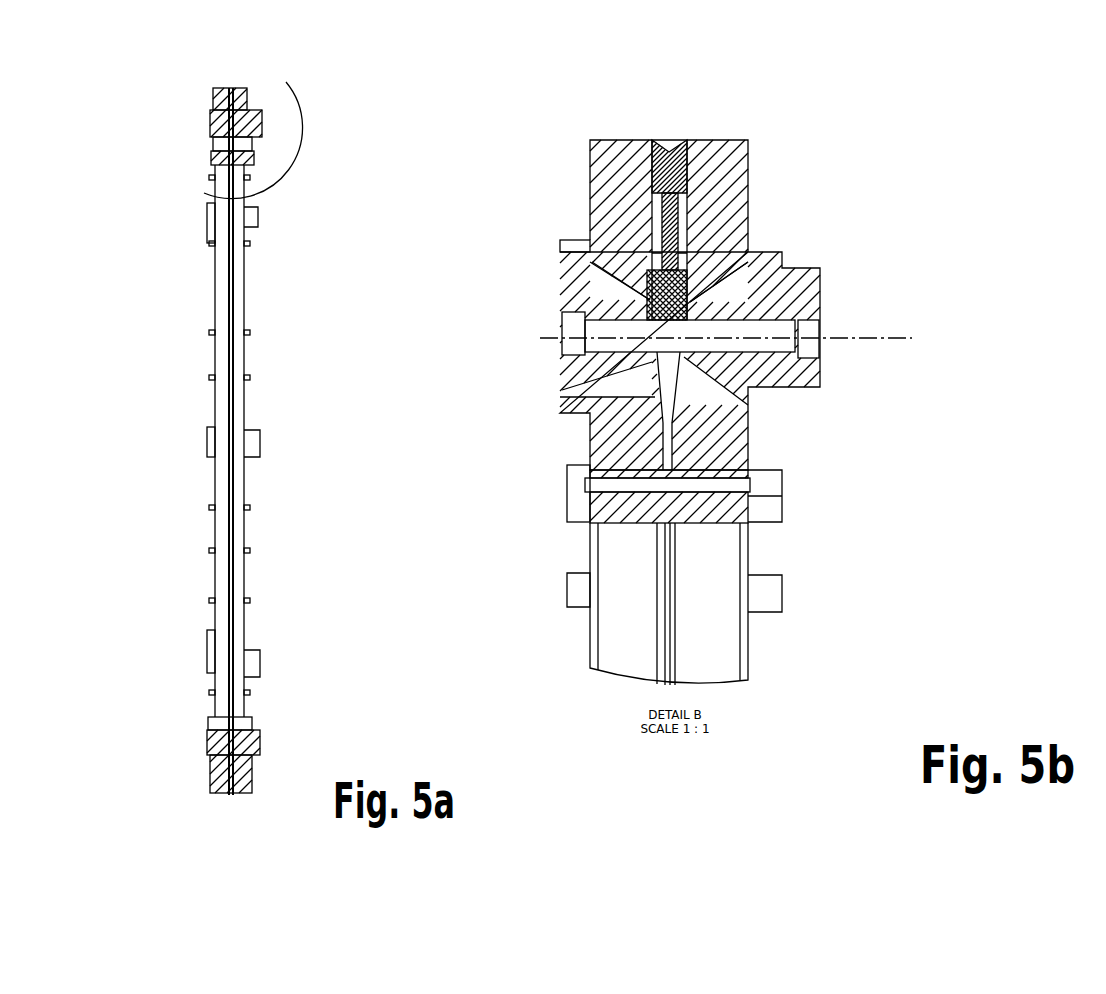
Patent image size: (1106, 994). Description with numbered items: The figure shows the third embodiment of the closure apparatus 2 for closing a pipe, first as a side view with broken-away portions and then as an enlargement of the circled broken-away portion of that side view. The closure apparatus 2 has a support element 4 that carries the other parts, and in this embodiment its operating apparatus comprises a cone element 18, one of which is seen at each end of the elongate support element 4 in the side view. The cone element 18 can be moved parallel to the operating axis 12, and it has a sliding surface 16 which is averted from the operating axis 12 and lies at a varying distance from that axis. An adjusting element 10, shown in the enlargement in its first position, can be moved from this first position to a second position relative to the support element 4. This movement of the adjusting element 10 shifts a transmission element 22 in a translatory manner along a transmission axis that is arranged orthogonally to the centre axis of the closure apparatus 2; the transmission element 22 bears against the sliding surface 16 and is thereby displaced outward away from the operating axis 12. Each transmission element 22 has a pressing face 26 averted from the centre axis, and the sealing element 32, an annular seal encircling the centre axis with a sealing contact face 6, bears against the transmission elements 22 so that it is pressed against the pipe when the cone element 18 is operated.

In FIG. 5A, the closure apparatus 2 is at (332, 231).
In FIG. 5A, the support element 4 is at (233, 490).
In FIG. 5A, the cone element 18 is at (212, 127).
In FIG. 5B, the cone element 18 is at (782, 258).
In FIG. 5B, the sealing contact face 6 is at (679, 140).
In FIG. 5B, the sealing element 32 is at (672, 140).
In FIG. 5B, the pressing face 26 is at (650, 218).
In FIG. 5B, the transmission element 22 is at (600, 262).
In FIG. 5B, the sliding surface 16 is at (605, 300).
In FIG. 5B, the adjusting element 10 is at (585, 338).
In FIG. 5B, the operating axis 12 is at (900, 342).